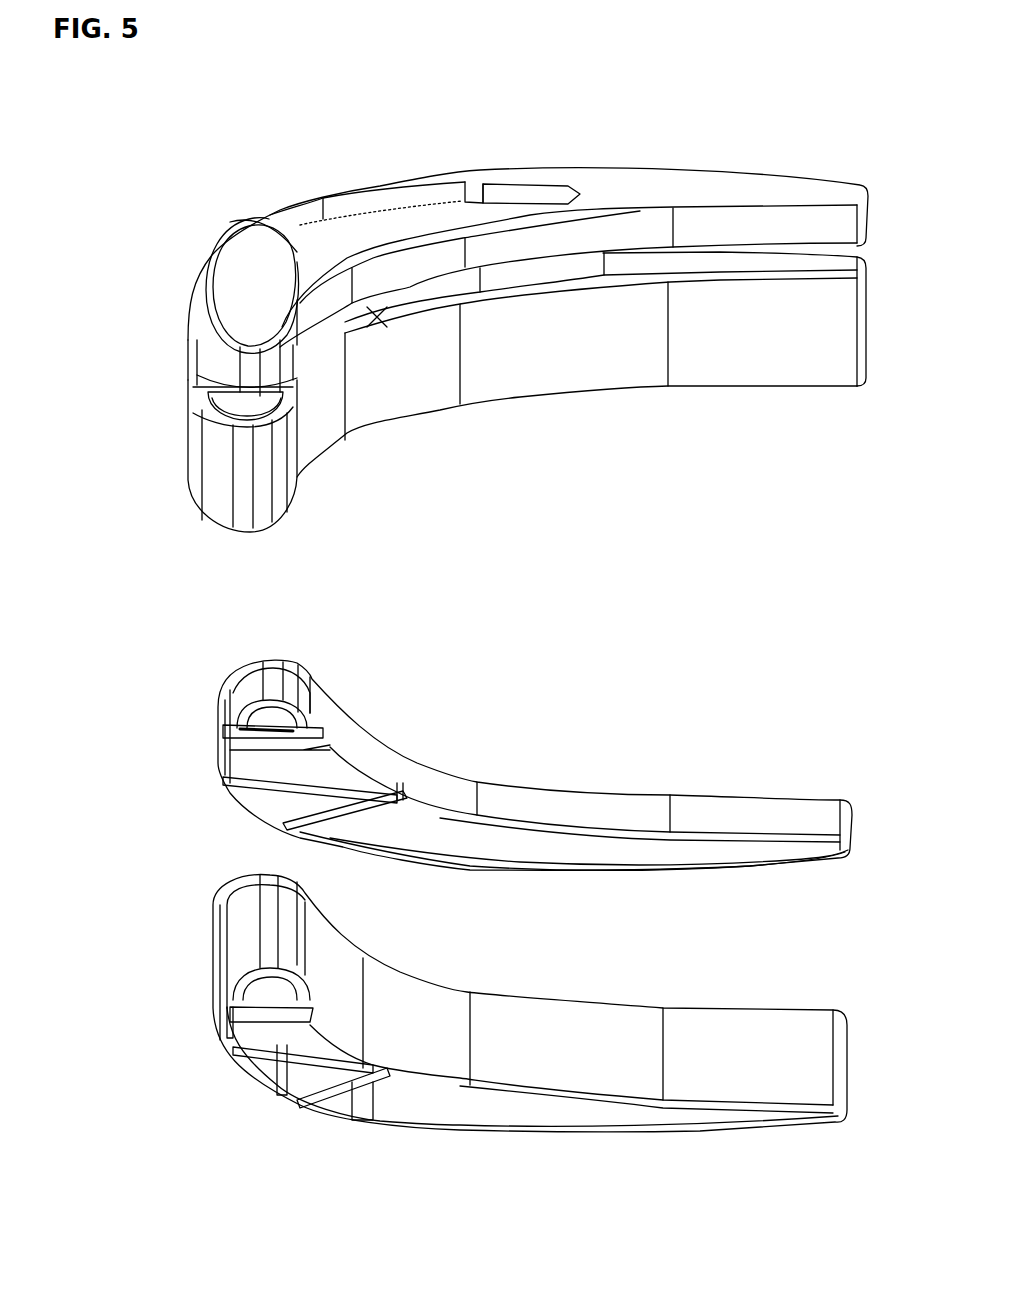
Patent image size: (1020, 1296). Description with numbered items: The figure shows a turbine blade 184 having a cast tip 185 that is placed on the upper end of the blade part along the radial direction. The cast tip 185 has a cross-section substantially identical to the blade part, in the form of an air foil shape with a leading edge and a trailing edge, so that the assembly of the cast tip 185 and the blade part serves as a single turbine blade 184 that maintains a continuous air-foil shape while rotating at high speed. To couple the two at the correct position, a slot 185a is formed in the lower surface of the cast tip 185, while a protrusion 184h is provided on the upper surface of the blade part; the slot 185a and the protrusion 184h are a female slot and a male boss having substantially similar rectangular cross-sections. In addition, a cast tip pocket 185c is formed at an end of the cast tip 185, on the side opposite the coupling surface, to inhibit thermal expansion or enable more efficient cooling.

The cast tip 185 is at (637, 188).
The slot 185a is at (387, 287).
The cast tip pocket 185c is at (253, 220).
The turbine blade 184 is at (693, 363).
The protrusion 184h is at (380, 320).